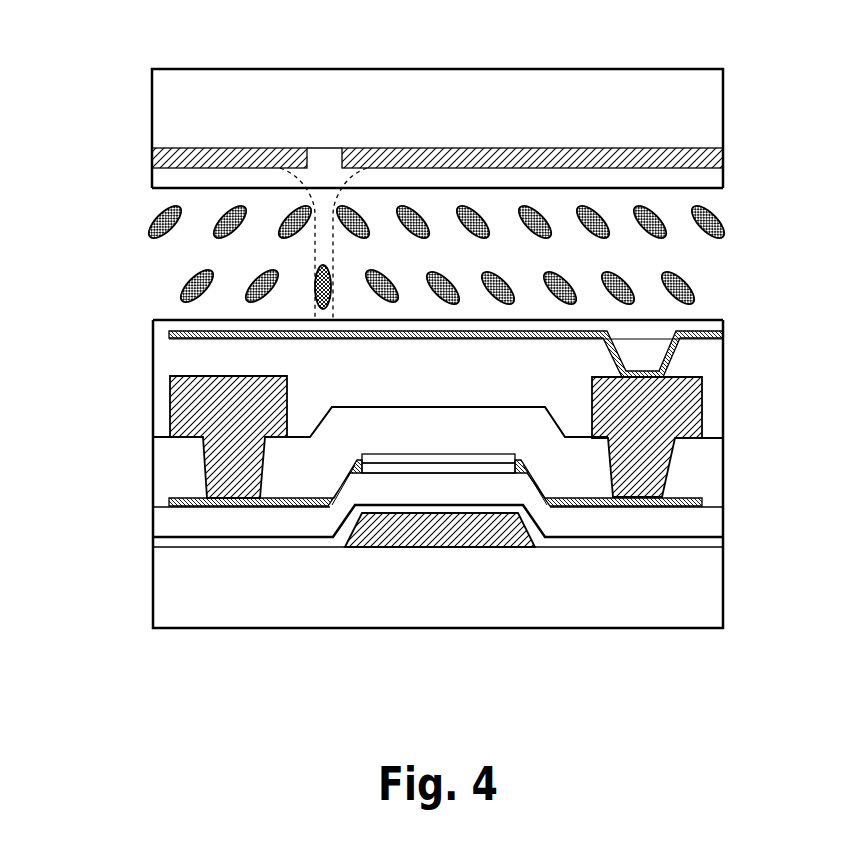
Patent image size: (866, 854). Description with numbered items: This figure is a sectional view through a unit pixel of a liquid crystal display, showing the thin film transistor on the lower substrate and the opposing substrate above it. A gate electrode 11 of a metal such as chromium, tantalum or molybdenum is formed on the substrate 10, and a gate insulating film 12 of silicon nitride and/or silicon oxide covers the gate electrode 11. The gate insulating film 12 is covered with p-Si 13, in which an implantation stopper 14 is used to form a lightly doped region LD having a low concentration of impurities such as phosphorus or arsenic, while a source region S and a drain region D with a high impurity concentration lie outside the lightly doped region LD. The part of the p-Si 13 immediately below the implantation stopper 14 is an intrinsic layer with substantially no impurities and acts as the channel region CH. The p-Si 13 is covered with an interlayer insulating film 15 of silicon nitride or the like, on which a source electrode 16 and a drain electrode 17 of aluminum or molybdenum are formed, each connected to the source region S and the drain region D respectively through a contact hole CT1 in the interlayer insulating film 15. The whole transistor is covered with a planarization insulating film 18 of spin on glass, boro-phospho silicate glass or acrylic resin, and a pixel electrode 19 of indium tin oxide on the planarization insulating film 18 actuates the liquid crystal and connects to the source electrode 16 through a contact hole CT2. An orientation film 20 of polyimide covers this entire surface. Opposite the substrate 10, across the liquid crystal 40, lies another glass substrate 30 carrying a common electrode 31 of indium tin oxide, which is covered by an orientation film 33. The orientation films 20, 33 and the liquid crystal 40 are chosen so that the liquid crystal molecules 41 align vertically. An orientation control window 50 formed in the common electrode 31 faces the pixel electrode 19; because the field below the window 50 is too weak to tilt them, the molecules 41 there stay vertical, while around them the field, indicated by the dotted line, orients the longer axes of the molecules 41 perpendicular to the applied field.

The glass substrate 30 is at (160, 106).
The common electrode 31 is at (163, 150).
The orientation film 33 is at (158, 181).
The orientation control window 50 is at (327, 160).
The liquid crystal 40 is at (168, 260).
The liquid crystal molecules 41 is at (160, 217).
The orientation film 20 is at (153, 323).
The pixel electrode 19 is at (607, 331).
The contact hole CT2 is at (672, 353).
The planarization insulating film 18 is at (182, 362).
The source electrode 16 is at (700, 376).
The drain electrode 17 is at (313, 438).
The interlayer insulating film 15 is at (362, 458).
The implantation stopper 14 is at (362, 468).
The channel region CH is at (360, 470).
The contact hole CT1 is at (206, 468).
The drain region D is at (197, 512).
The source region S is at (655, 508).
The p-Si 13 is at (704, 501).
The gate insulating film 12 is at (197, 542).
The gate electrode 11 is at (470, 547).
The substrate 10 is at (712, 588).
The lightly doped region LD is at (315, 507).